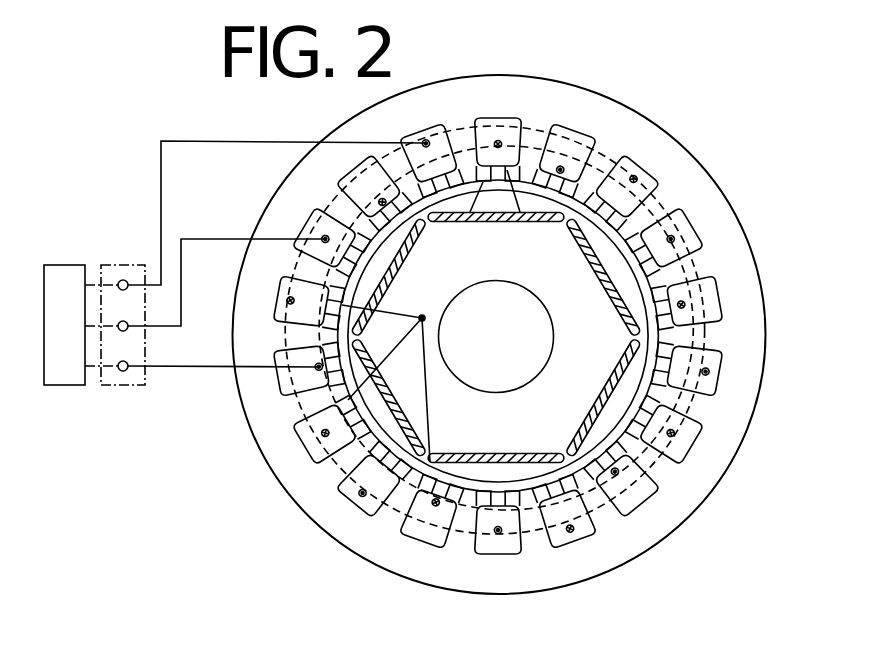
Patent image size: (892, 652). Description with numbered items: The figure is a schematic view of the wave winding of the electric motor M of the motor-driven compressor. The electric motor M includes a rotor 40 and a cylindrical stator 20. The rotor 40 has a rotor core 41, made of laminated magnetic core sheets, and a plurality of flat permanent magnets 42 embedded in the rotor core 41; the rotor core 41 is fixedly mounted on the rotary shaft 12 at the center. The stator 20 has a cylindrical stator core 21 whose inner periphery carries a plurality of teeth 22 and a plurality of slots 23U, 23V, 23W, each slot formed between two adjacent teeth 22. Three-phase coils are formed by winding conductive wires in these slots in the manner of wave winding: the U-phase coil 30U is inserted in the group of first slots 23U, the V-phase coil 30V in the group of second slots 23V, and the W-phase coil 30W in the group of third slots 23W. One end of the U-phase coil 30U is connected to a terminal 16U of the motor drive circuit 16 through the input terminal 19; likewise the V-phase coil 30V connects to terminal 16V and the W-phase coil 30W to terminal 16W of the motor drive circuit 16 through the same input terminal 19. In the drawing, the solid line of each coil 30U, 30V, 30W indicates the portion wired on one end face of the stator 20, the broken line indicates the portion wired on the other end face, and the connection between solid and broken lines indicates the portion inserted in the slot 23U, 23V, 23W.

The rotary shaft 12 is at (472, 282).
The motor drive circuit 16 is at (68, 265).
The terminal 16U is at (122, 280).
The terminal 16V is at (128, 331).
The terminal 16W is at (123, 372).
The input terminal 19 is at (105, 385).
The stator 20 is at (727, 173).
The stator core 21 is at (744, 268).
The teeth 22 is at (628, 326).
The first slots 23U is at (282, 320).
The second slots 23V is at (345, 464).
The third slots 23W is at (290, 387).
The U-phase coil 30U is at (283, 228).
The V-phase coil 30V is at (395, 522).
The W-phase coil 30W is at (547, 440).
The rotor 40 is at (478, 622).
The rotor core 41 is at (478, 470).
The permanent magnets 42 is at (498, 470).
The electric motor M is at (294, 599).